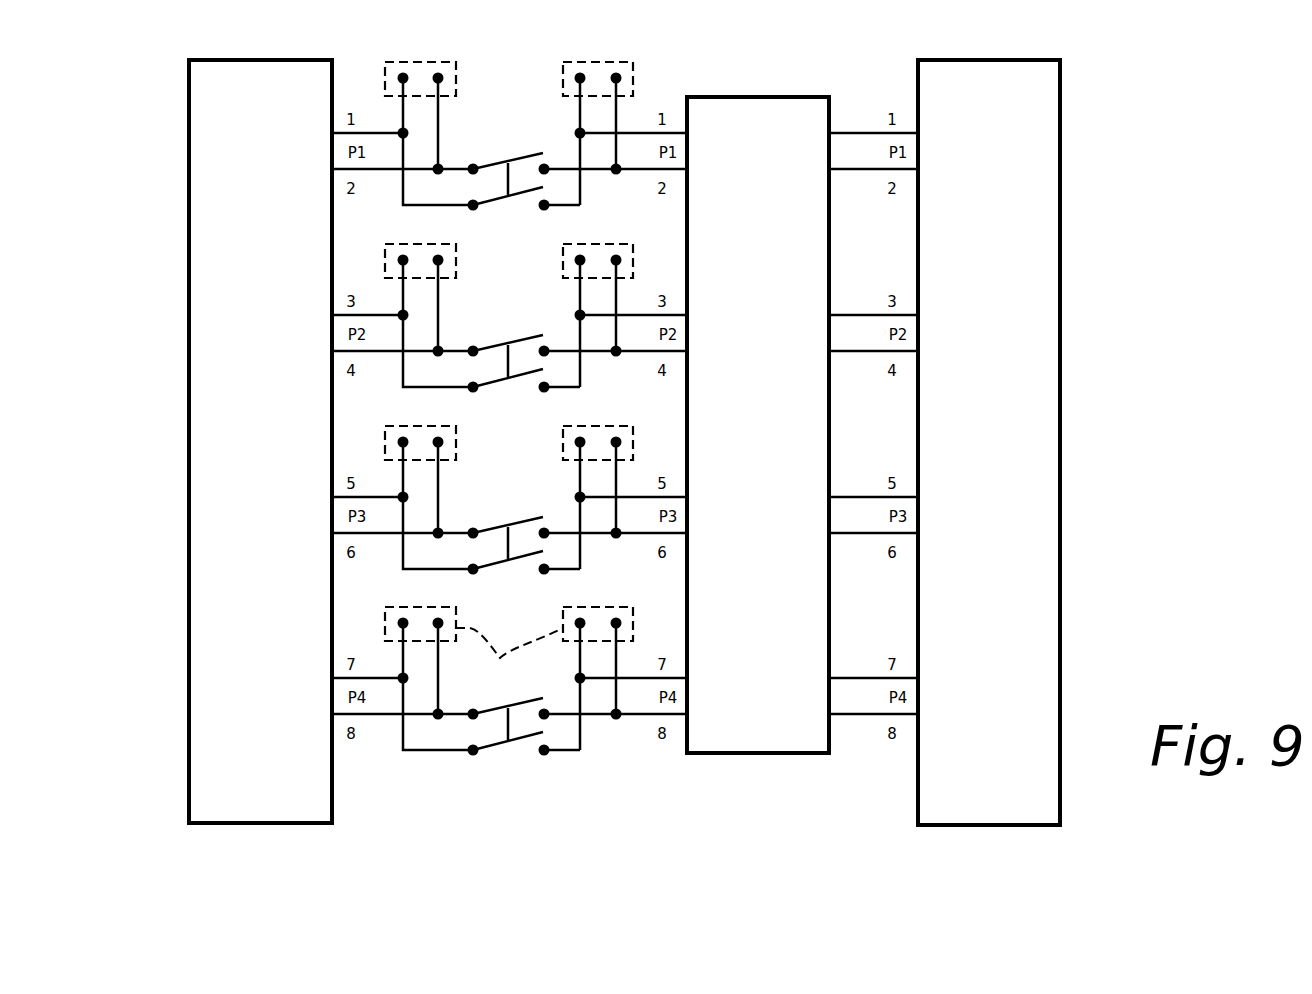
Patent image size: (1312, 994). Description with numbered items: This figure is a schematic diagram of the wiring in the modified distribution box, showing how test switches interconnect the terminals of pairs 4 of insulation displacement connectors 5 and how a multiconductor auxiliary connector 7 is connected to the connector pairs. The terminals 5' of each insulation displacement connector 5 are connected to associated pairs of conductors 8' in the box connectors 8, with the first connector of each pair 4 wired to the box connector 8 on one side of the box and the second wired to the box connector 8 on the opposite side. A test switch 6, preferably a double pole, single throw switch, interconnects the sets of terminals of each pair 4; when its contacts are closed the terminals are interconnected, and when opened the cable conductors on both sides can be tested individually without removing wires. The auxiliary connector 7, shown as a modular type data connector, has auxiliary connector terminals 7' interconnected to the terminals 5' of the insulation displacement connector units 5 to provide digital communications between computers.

The pair of insulation displacement connectors 4 is at (500, 656).
The insulation displacement connector 5 is at (459, 594).
The terminal 5' is at (486, 352).
The test switch 6 is at (494, 747).
The auxiliary connector 7 is at (758, 380).
The auxiliary connector terminal 7' is at (634, 128).
The box connector 8 is at (624, 461).
The conductor 8' is at (385, 137).